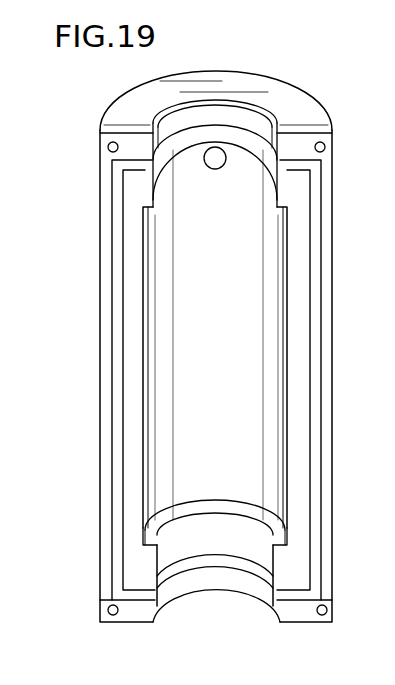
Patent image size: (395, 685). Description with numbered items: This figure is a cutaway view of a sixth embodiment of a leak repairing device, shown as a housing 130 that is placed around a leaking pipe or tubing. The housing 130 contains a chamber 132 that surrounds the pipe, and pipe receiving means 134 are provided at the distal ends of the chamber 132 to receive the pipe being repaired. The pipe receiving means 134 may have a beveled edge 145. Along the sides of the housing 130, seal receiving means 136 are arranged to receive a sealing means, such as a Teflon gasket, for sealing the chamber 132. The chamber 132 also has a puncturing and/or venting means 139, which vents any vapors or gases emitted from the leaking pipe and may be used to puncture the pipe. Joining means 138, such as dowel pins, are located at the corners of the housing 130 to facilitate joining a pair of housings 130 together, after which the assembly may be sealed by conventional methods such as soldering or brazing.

The housing 130 is at (78, 449).
The chamber 132 is at (278, 287).
The pipe receiving means 134 is at (220, 578).
The seal receiving means 136 is at (322, 370).
The joining means 138 is at (108, 149).
The puncturing and/or venting means 139 is at (217, 170).
The beveled edge 145 is at (262, 110).